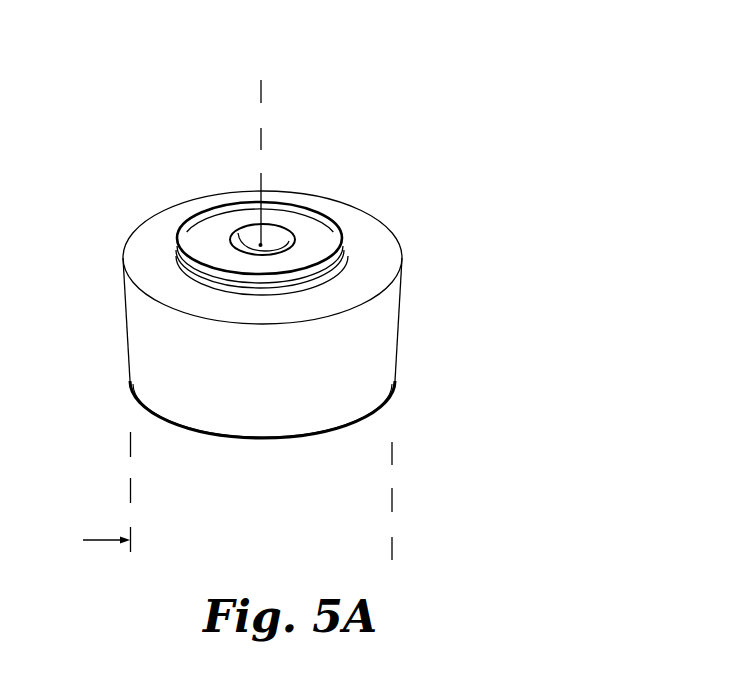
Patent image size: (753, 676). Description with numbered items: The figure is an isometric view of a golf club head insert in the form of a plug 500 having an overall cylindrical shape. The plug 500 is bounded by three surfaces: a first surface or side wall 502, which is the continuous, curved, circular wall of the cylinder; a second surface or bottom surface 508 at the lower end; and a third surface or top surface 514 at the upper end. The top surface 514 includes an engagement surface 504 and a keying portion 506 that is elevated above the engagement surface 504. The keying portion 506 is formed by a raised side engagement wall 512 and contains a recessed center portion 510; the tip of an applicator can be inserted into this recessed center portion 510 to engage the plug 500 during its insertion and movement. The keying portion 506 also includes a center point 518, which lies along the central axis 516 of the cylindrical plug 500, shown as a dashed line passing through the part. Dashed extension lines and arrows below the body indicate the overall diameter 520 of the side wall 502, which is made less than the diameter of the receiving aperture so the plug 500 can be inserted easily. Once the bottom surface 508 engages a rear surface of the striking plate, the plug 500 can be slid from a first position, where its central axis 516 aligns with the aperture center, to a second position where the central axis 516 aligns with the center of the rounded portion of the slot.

The plug 500 is at (541, 108).
The side wall 502 is at (158, 325).
The engagement surface 504 is at (160, 242).
The keying portion 506 is at (227, 217).
The bottom surface 508 is at (234, 440).
The recessed center portion 510 is at (261, 245).
The raised side engagement wall 512 is at (345, 253).
The top surface 514 is at (289, 193).
The central axis 516 is at (256, 125).
The center point 518 is at (263, 246).
The overall diameter 520 is at (400, 540).